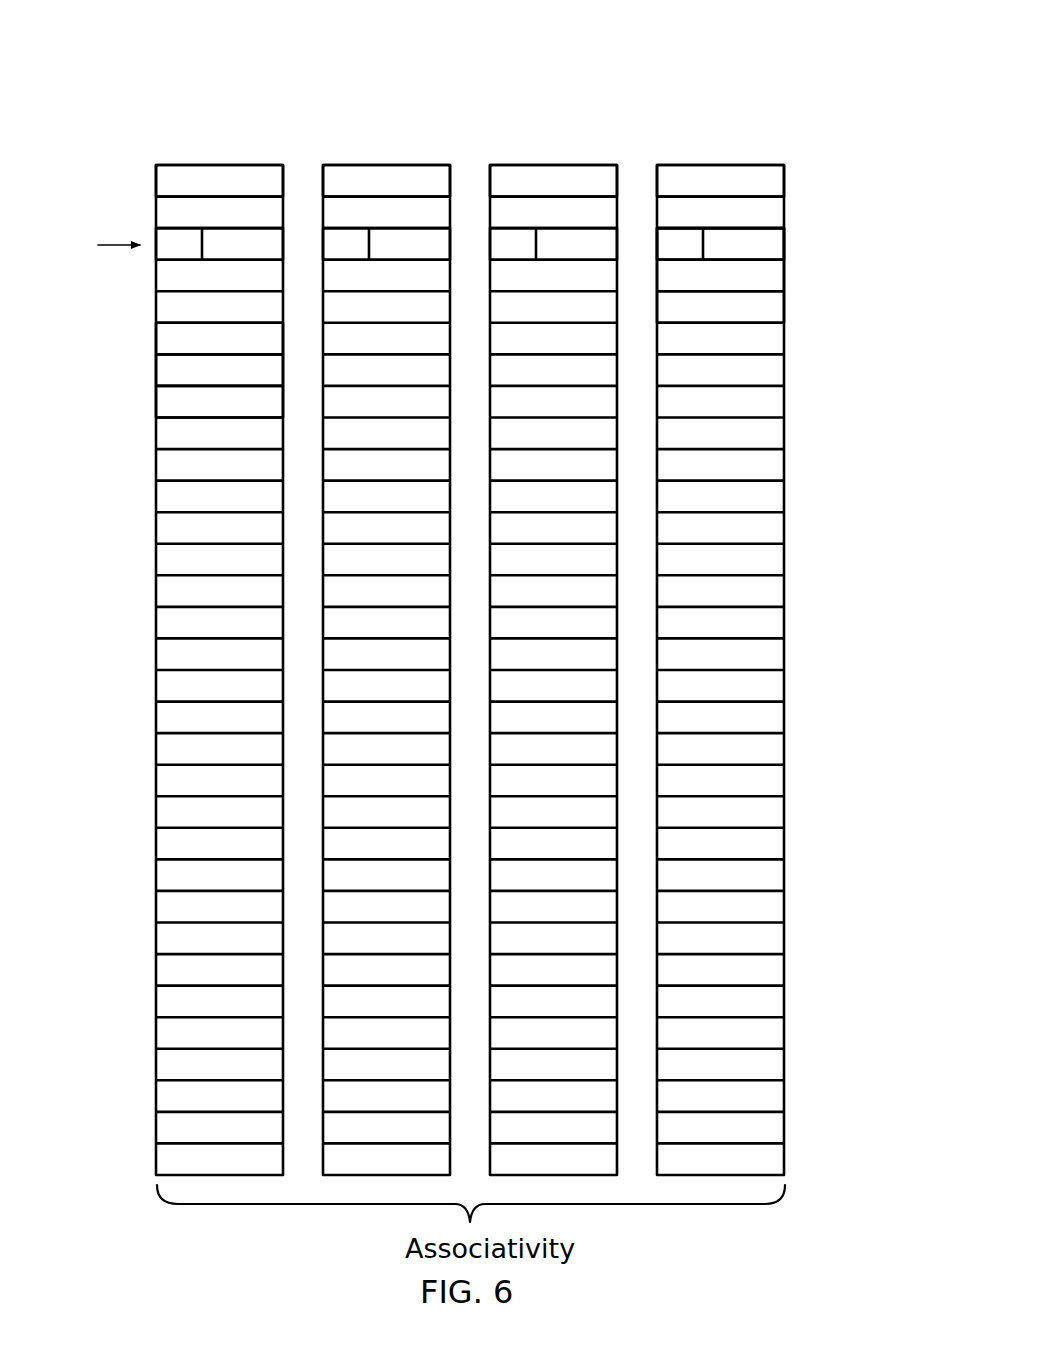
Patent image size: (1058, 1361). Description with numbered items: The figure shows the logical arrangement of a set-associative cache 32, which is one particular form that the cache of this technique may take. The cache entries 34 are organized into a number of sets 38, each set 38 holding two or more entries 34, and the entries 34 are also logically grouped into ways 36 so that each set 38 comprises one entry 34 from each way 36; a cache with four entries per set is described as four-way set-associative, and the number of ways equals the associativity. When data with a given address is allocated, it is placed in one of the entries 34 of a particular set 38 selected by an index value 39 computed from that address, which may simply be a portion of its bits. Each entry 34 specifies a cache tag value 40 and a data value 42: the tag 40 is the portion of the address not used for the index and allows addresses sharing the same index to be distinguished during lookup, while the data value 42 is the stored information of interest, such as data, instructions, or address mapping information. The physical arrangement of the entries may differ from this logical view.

The set-associative cache 32 is at (818, 70).
The cache entry 34 is at (195, 337).
The way 36 is at (726, 112).
The set 38 is at (857, 278).
The index value 39 is at (66, 262).
The cache tag value 40 is at (182, 228).
The data value 42 is at (244, 226).